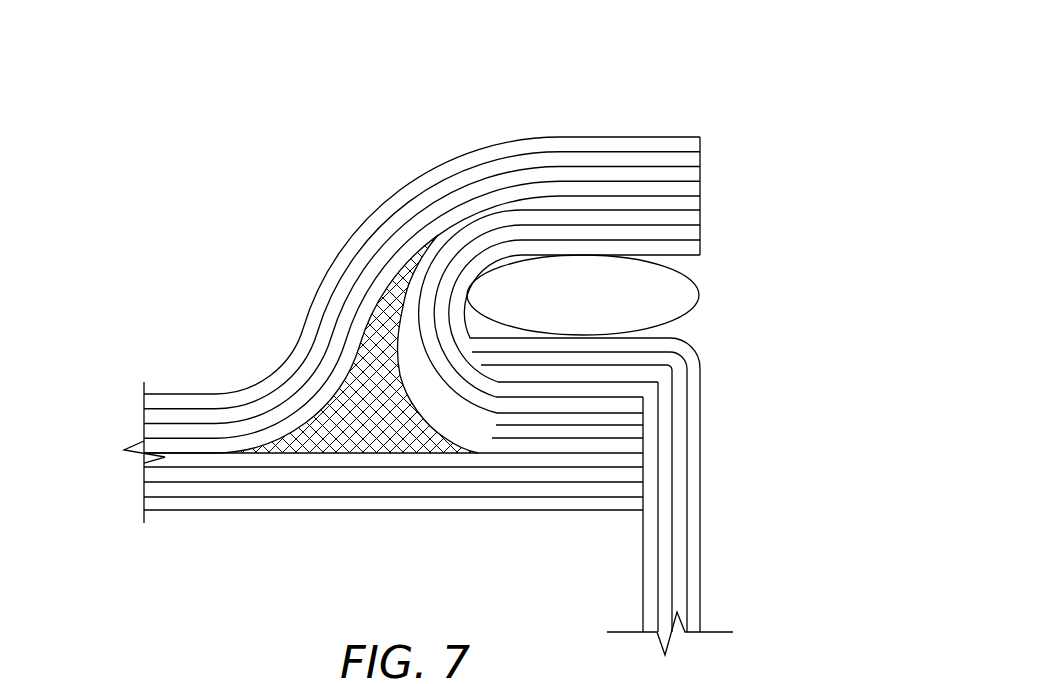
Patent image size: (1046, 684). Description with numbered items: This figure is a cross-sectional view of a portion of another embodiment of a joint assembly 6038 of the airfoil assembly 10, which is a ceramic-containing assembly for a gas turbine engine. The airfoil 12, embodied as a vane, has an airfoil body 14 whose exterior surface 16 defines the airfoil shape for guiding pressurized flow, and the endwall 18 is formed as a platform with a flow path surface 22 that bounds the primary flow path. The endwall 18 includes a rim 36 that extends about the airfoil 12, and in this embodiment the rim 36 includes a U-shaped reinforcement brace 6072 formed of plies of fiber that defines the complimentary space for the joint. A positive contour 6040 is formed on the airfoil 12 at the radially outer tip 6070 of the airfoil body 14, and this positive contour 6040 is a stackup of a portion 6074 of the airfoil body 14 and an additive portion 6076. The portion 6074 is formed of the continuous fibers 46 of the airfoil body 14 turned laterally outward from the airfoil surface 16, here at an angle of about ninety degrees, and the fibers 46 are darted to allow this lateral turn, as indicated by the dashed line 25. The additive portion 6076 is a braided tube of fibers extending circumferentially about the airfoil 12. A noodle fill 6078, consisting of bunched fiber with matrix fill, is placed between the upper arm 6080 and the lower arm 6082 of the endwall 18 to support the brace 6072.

The airfoil assembly 10 is at (775, 120).
The airfoil 12 is at (744, 512).
The airfoil body 14 is at (678, 588).
The exterior surface 16 is at (642, 595).
The endwall 18 is at (194, 364).
The flow path surface 22 is at (190, 514).
The dashed line 25 is at (690, 376).
The rim 36 is at (522, 138).
The continuous fibers 46 is at (688, 438).
The joint assembly 6038 is at (612, 140).
The positive contour 6040 is at (735, 355).
The radially outer tip 6070 is at (735, 260).
The U-shaped reinforcement brace 6072 is at (494, 435).
The portion of the airfoil body 6074 is at (628, 377).
The additive portion 6076 is at (688, 286).
The noodle fill 6078 is at (388, 378).
The upper arm 6080 is at (427, 197).
The lower arm 6082 is at (270, 497).